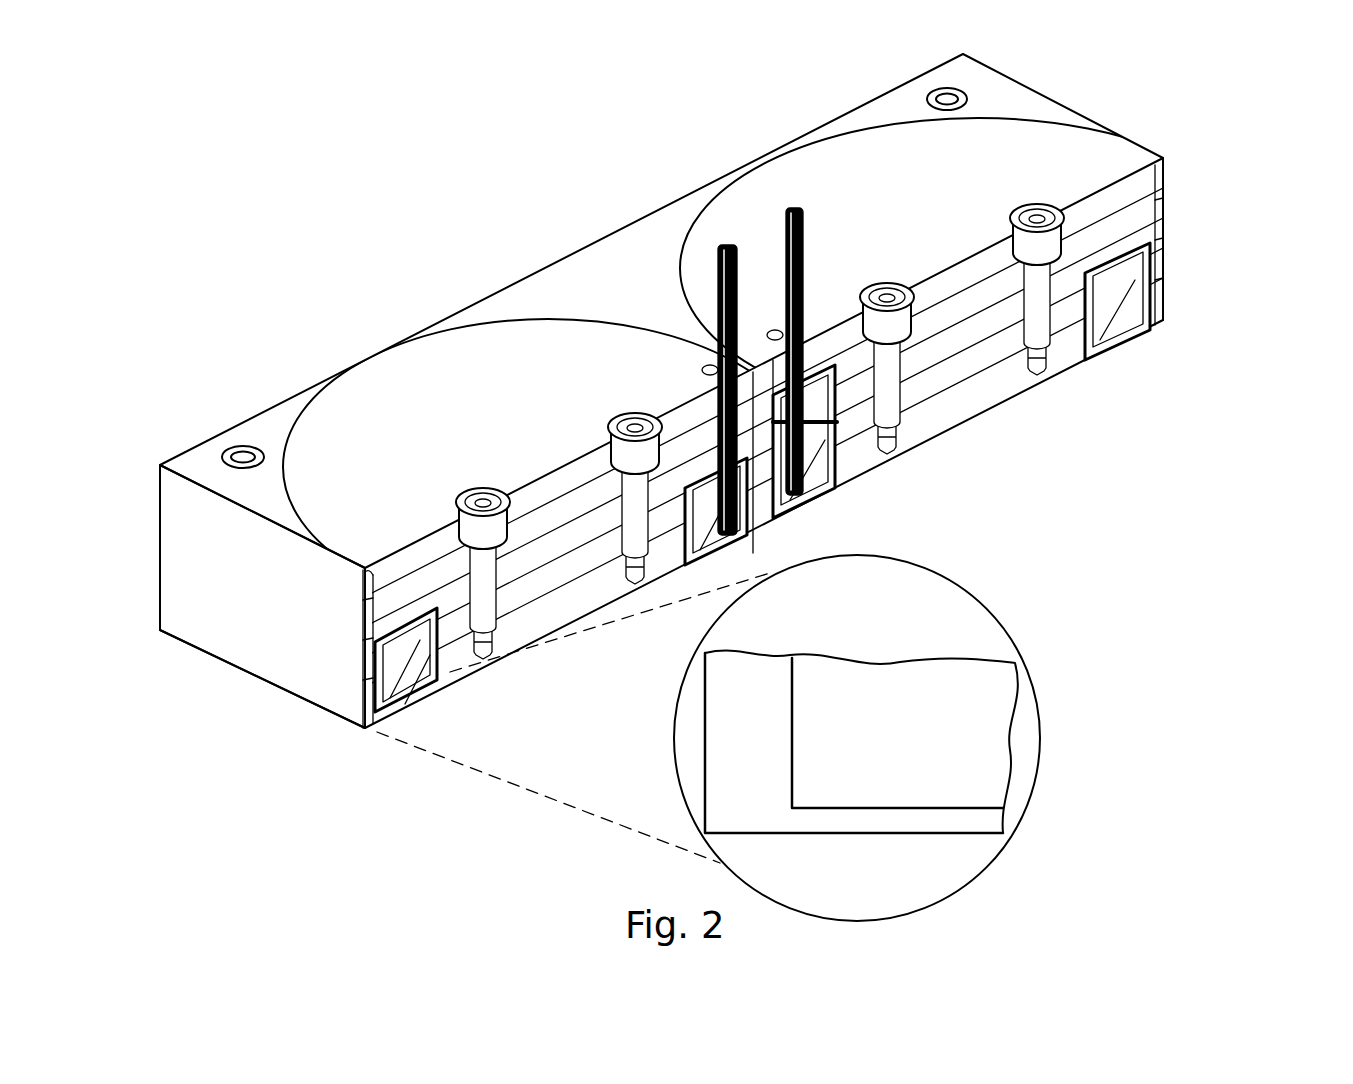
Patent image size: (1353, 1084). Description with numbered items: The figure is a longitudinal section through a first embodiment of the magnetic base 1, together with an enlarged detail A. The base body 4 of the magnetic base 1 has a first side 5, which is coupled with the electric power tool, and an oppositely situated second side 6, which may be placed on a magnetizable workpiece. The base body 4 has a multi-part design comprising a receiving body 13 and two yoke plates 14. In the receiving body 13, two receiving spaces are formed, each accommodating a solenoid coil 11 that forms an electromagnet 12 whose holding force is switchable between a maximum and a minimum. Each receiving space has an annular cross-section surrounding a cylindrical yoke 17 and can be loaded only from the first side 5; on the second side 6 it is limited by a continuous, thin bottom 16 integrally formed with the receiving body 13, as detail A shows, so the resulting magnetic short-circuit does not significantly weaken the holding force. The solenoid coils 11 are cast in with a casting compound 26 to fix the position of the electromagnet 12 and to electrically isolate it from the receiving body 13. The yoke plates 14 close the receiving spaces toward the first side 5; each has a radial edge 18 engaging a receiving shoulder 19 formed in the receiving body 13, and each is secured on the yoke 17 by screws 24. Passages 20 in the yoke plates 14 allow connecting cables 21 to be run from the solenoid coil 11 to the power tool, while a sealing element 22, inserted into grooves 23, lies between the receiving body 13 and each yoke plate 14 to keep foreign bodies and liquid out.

The magnetic base 1 is at (705, 493).
The base body 4 is at (316, 296).
The first side 5 is at (263, 440).
The second side 6 is at (292, 695).
The solenoid coil 11 is at (1154, 486).
The electromagnet 12 is at (1154, 486).
The receiving body 13 is at (223, 625).
The yoke plate 14 is at (818, 155).
The bottom 16 is at (838, 500).
The yoke 17 is at (945, 408).
The radial edge 18 is at (368, 567).
The receiving shoulder 19 is at (1239, 233).
The passage 20 is at (703, 370).
The connecting cable 21 is at (713, 273).
The sealing element 22 is at (360, 566).
The groove 23 is at (1166, 158).
The screw 24 is at (1055, 215).
The casting compound 26 is at (1163, 253).